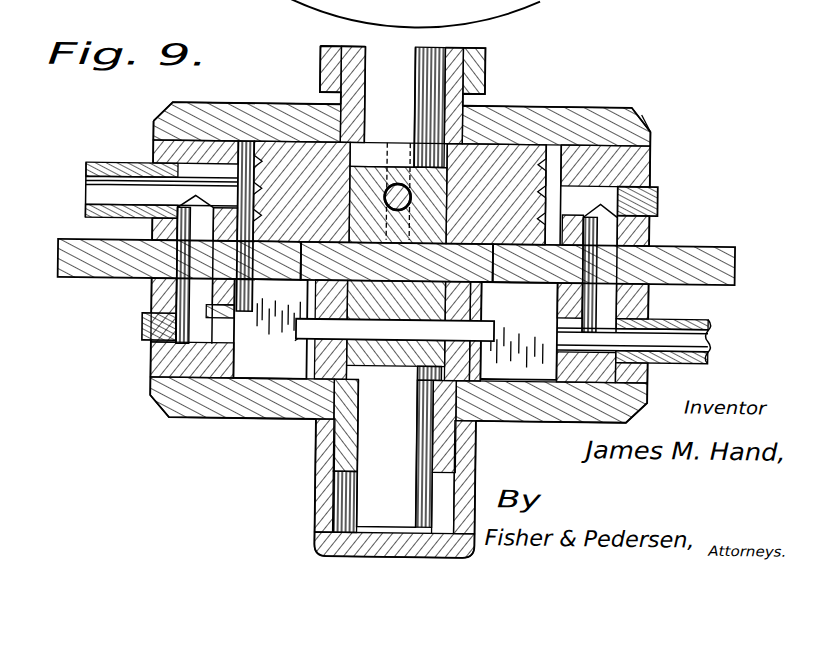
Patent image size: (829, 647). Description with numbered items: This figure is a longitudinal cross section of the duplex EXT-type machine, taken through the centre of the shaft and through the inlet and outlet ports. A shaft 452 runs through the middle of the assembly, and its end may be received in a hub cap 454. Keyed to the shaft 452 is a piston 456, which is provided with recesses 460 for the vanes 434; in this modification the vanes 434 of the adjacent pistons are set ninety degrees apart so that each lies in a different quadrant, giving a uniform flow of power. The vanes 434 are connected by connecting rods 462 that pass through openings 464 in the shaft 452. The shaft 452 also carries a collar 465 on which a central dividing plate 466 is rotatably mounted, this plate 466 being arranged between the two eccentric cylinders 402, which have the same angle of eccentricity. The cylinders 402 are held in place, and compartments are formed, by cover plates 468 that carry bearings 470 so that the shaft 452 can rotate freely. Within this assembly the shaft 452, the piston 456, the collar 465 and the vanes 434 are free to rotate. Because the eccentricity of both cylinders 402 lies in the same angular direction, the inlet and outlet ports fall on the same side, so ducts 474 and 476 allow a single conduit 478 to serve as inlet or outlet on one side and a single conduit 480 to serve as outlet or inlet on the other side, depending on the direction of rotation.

The eccentric cylinders 402 is at (649, 171).
The vanes 434 is at (356, 128).
The shaft 452 is at (340, 490).
The hub cap 454 is at (332, 502).
The piston 456 is at (649, 126).
The recesses 460 is at (419, 147).
The connecting rods 462 is at (409, 189).
The openings 464 is at (282, 301).
The collar 465 is at (481, 269).
The central dividing plate 466 is at (677, 258).
The cover plates 468 is at (152, 122).
The bearings 470 is at (352, 51).
The duct 474 is at (150, 284).
The duct 476 is at (656, 205).
The conduit 478 is at (118, 170).
The conduit 480 is at (709, 355).